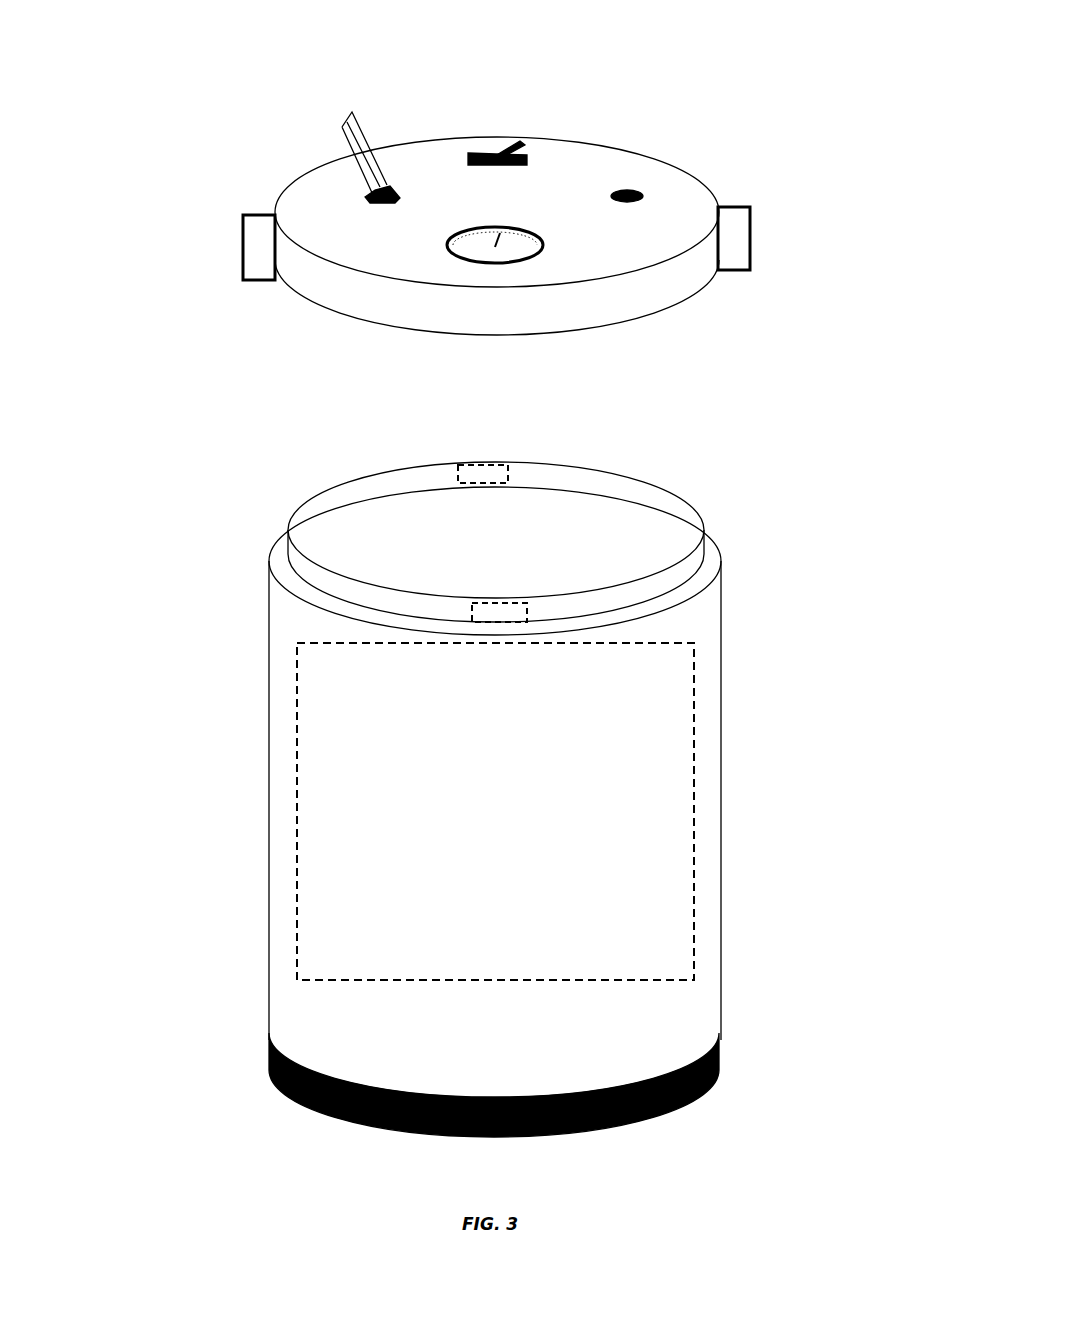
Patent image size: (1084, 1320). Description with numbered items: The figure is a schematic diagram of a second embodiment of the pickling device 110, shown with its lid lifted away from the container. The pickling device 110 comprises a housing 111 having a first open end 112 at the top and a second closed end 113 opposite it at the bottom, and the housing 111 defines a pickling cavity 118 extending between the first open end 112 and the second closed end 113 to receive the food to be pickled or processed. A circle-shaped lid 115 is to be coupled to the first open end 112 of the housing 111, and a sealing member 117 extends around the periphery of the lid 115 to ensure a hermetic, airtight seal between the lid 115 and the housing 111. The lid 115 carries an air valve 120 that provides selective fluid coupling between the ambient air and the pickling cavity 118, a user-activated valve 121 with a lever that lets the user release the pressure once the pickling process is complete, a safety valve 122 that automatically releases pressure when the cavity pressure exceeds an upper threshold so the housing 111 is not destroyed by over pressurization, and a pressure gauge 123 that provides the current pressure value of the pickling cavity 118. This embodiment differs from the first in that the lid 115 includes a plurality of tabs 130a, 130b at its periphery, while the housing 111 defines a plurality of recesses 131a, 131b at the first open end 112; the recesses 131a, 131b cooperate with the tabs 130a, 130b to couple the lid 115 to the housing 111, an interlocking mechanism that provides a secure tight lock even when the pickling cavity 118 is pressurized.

The pickling device 110 is at (165, 142).
The housing 111 is at (258, 676).
The first open end 112 is at (457, 560).
The second closed end 113 is at (283, 1085).
The lid 115 is at (703, 165).
The sealing member 117 is at (323, 289).
The pickling cavity 118 is at (512, 823).
The air valve 120 is at (350, 150).
The user-activated valve 121 is at (488, 150).
The safety valve 122 is at (626, 190).
The pressure gauge 123 is at (500, 252).
The tab 130a is at (252, 252).
The tab 130b is at (738, 252).
The recess 131a is at (495, 480).
The recess 131b is at (703, 562).